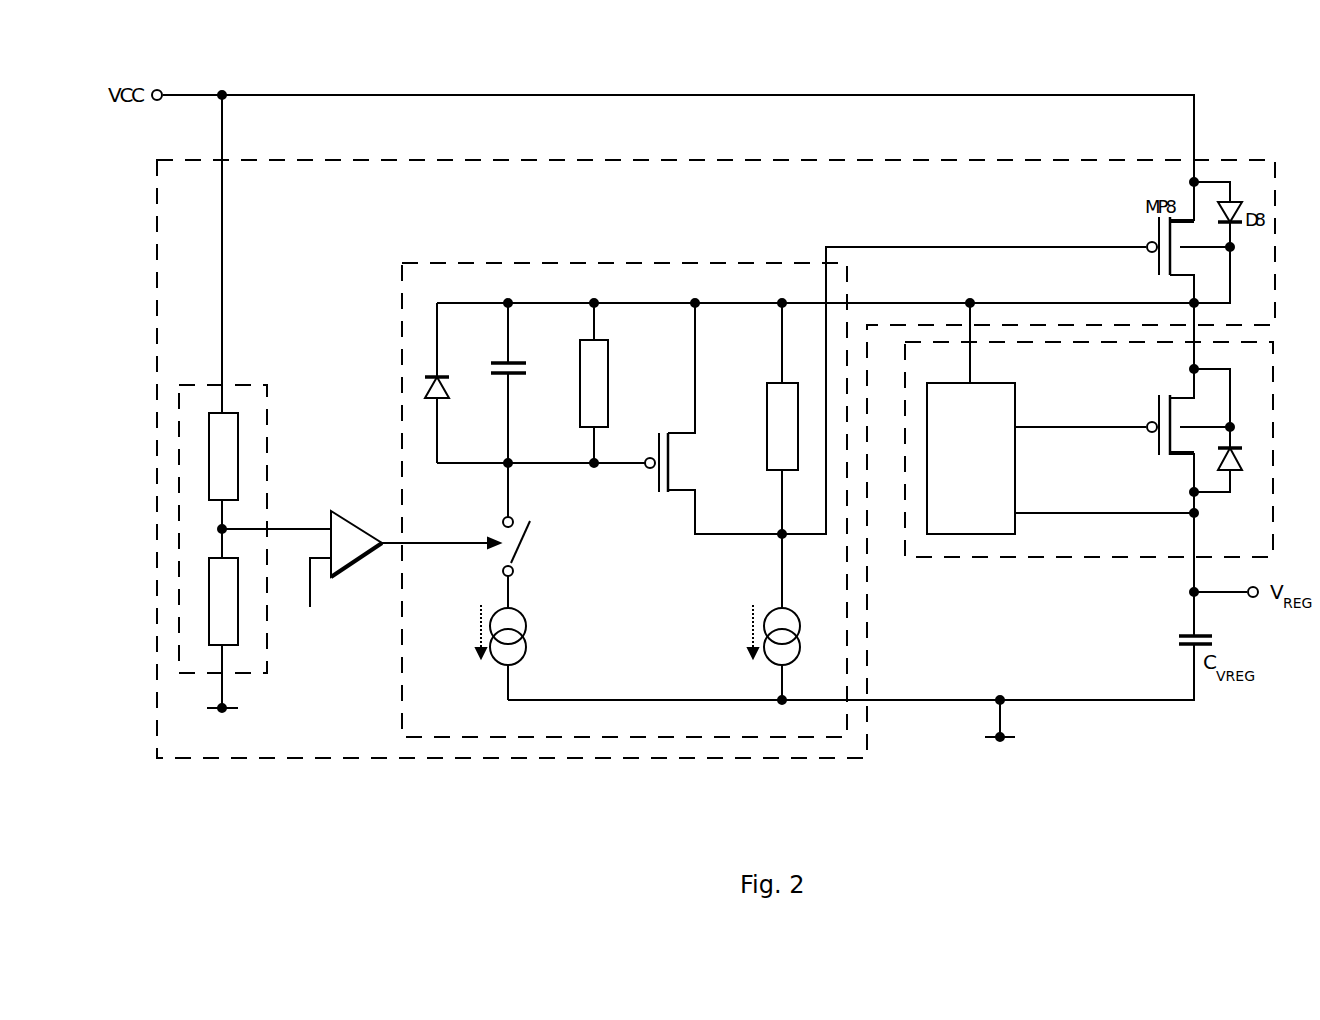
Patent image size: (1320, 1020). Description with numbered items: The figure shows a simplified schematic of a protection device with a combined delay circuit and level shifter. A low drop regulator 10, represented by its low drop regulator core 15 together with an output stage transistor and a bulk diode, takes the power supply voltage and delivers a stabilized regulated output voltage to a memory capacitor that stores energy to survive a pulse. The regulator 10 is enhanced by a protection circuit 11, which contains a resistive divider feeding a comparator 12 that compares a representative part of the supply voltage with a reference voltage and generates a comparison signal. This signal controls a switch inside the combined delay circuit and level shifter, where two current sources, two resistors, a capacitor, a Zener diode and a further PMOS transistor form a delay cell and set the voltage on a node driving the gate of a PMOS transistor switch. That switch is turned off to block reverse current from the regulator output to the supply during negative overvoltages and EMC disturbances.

The low drop regulator 10 is at (1051, 558).
The protection circuit 11 is at (868, 618).
The comparator 12 is at (359, 521).
The low drop regulator (LDR) core 15 is at (982, 427).